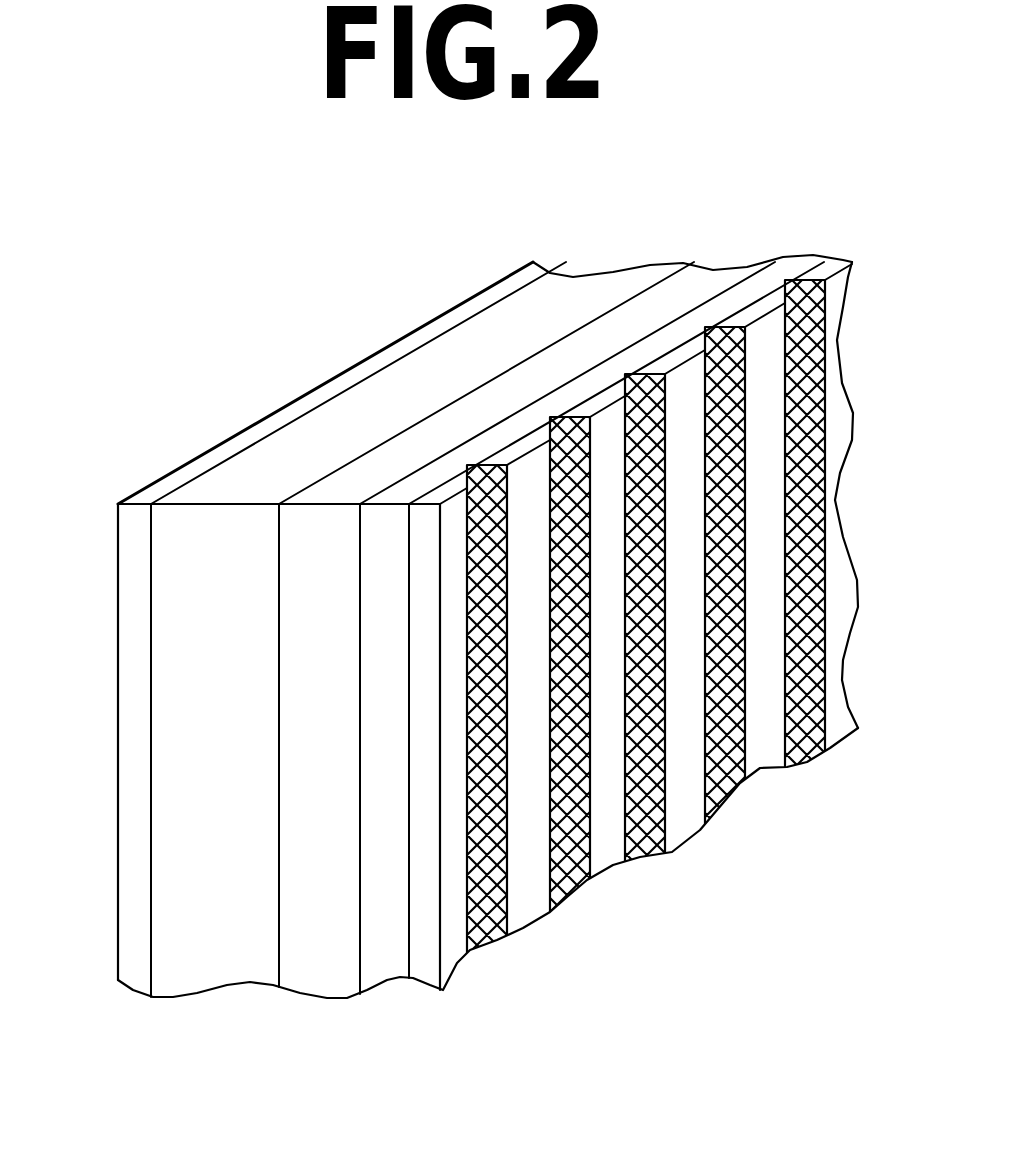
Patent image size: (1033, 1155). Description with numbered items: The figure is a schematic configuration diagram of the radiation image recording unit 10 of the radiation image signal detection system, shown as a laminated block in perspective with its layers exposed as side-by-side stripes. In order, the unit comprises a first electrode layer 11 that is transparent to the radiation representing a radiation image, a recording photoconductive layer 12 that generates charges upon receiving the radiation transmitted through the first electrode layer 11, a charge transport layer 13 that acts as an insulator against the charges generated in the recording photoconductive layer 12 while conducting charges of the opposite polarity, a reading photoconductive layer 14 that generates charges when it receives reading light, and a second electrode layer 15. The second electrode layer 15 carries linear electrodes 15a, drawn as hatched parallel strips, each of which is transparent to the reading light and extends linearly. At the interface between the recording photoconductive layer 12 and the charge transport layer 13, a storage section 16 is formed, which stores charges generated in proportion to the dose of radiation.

The radiation image recording unit 10 is at (217, 438).
The first electrode layer 11 is at (135, 980).
The recording photoconductive layer 12 is at (188, 987).
The charge transport layer 13 is at (330, 987).
The reading photoconductive layer 14 is at (395, 970).
The second electrode layer 15 is at (425, 970).
The linear electrode 15a is at (570, 887).
The storage section 16 is at (265, 931).